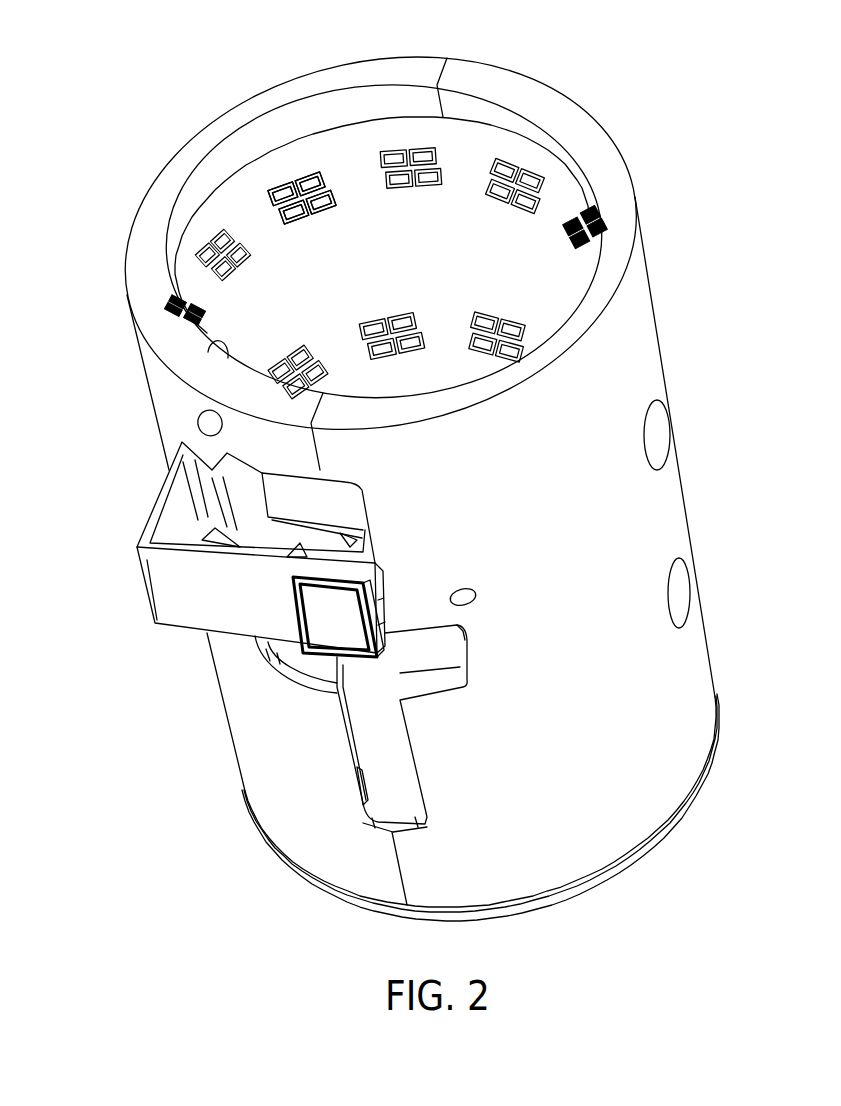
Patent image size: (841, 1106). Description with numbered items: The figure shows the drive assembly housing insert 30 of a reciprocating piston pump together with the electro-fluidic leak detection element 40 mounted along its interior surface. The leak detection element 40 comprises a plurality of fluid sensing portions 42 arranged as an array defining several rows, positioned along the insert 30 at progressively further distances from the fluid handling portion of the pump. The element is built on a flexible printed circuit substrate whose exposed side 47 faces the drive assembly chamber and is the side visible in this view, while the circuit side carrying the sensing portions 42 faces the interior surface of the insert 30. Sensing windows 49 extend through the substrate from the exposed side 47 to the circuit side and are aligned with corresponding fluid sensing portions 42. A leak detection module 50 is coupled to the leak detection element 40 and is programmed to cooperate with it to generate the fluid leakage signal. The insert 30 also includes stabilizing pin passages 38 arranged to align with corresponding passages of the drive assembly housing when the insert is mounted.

The drive assembly housing insert 30 is at (660, 326).
The stabilizing pin passages 38 is at (664, 437).
The electro-fluidic leak detection element 40 is at (140, 577).
The fluid sensing portions 42 is at (288, 180).
The exposed side 47 is at (399, 254).
The sensing windows 49 is at (317, 172).
The leak detection module 50 is at (297, 611).